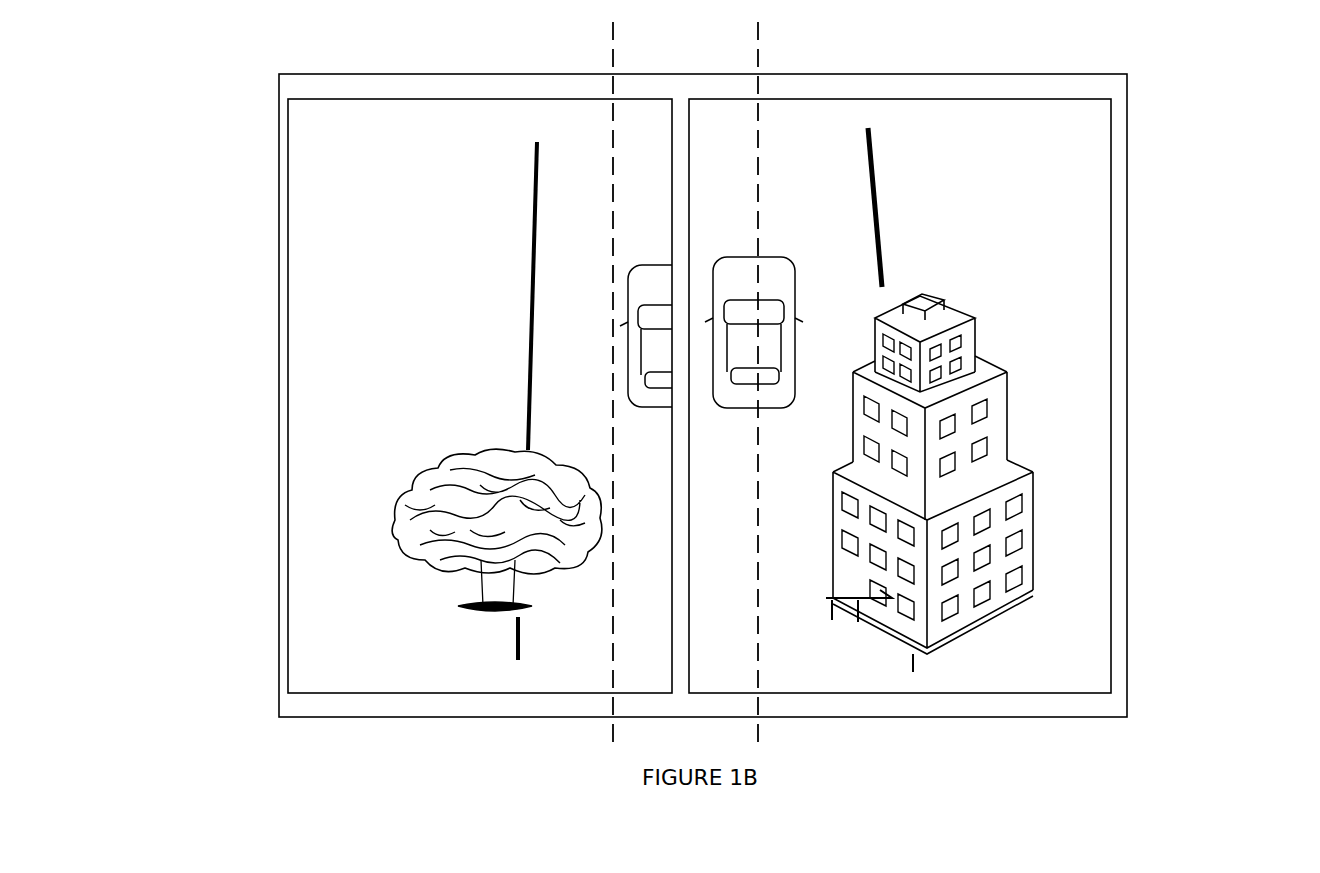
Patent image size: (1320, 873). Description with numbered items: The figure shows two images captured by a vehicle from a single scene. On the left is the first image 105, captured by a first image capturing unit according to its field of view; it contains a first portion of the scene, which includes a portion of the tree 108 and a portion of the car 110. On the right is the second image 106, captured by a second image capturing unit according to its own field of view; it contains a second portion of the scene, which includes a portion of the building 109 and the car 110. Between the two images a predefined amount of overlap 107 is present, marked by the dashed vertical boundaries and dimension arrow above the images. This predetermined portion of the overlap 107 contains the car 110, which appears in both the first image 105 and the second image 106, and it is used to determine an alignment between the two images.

The first image 105 is at (298, 416).
The second image 106 is at (1112, 470).
The overlap 107 is at (758, 48).
The tree 108 is at (467, 457).
The building 109 is at (963, 305).
The car 110 is at (654, 253).